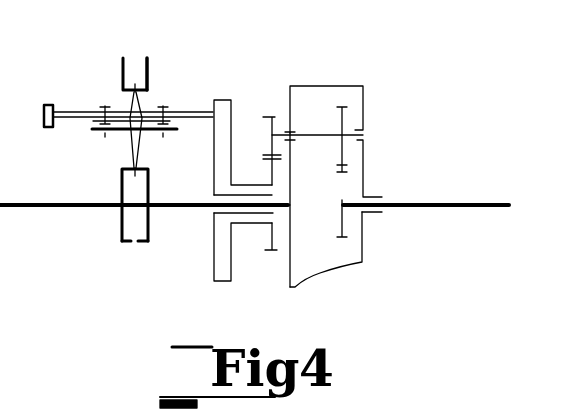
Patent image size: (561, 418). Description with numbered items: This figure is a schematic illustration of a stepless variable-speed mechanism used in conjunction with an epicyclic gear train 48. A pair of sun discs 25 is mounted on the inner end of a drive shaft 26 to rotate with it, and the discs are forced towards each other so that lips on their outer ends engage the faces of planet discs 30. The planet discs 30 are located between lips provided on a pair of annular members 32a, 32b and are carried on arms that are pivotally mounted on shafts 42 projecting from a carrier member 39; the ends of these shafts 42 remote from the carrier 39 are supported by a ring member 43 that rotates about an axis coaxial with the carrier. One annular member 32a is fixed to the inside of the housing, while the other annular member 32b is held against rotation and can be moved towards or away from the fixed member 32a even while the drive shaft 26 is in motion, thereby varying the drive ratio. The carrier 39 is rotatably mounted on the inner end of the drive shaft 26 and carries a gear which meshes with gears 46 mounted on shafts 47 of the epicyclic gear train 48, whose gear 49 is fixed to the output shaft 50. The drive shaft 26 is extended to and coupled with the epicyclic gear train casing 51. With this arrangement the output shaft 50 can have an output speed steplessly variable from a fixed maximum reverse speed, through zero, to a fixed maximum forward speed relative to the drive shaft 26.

The sun discs 25 is at (149, 232).
The drive shaft 26 is at (53, 206).
The planet discs 30 is at (138, 104).
The annular member 32a is at (152, 72).
The annular member 32b is at (120, 70).
The carrier member 39 is at (220, 112).
The shafts 42 is at (199, 121).
The ring member 43 is at (43, 104).
The gears 46 is at (275, 127).
The shafts 47 is at (317, 138).
The epicyclic gear train 48 is at (356, 60).
The gear 49 is at (338, 230).
The output shaft 50 is at (435, 206).
The epicyclic gear train casing 51 is at (285, 276).